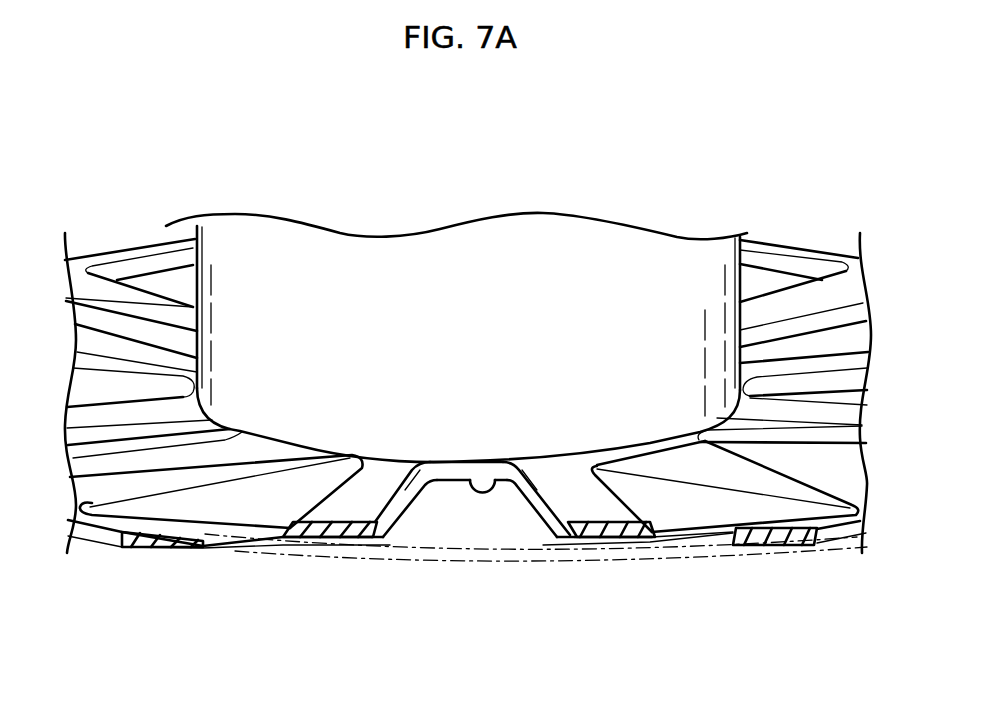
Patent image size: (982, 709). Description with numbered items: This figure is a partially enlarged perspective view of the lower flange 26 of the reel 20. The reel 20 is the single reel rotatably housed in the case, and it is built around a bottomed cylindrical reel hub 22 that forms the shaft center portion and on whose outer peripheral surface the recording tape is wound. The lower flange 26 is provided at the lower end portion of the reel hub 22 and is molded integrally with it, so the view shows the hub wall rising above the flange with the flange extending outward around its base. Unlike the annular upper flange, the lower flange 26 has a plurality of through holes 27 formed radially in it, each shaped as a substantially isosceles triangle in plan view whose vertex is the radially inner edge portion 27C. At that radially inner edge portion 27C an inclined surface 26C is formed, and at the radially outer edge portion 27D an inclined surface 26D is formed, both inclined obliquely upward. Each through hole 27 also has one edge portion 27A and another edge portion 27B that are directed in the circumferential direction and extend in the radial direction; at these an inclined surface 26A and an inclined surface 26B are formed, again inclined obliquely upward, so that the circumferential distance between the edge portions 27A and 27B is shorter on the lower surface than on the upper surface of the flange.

The reel 20 is at (732, 202).
The reel hub 22 is at (289, 245).
The lower flange 26 is at (793, 243).
The inclined surface 26A is at (392, 509).
The inclined surface 26B is at (543, 508).
The inclined surface 26C is at (450, 474).
The inclined surface 26D is at (128, 271).
The through hole 27 is at (243, 483).
The one edge portion 27A is at (415, 503).
The other edge portion 27B is at (520, 503).
The radially inner edge portion 27C is at (489, 490).
The radially outer edge portion 27D is at (164, 277).